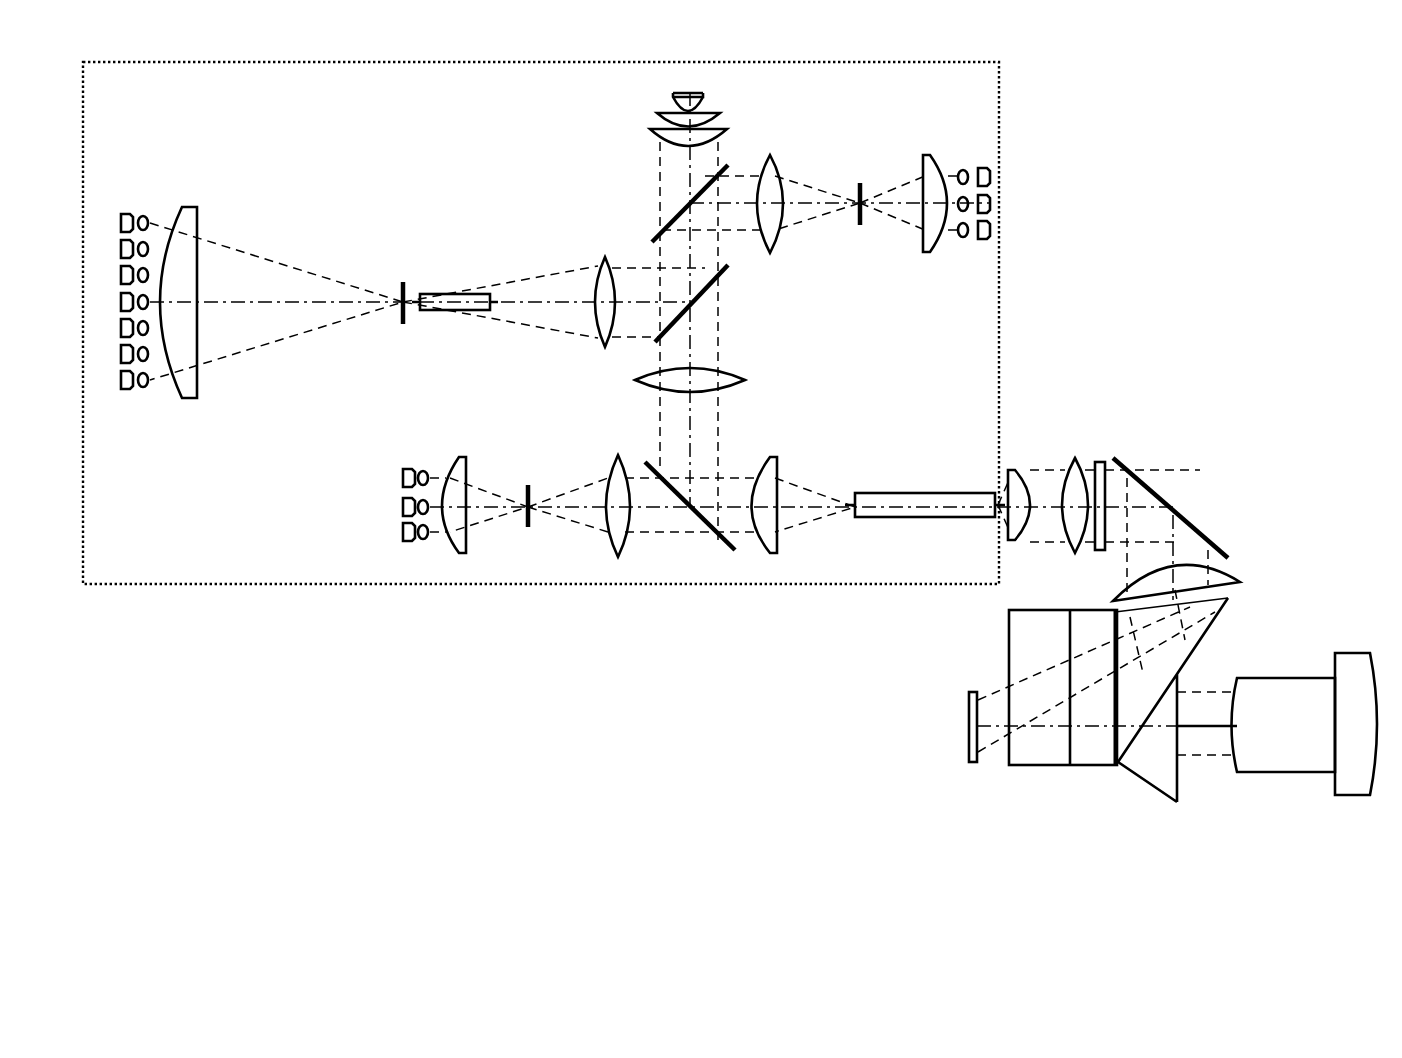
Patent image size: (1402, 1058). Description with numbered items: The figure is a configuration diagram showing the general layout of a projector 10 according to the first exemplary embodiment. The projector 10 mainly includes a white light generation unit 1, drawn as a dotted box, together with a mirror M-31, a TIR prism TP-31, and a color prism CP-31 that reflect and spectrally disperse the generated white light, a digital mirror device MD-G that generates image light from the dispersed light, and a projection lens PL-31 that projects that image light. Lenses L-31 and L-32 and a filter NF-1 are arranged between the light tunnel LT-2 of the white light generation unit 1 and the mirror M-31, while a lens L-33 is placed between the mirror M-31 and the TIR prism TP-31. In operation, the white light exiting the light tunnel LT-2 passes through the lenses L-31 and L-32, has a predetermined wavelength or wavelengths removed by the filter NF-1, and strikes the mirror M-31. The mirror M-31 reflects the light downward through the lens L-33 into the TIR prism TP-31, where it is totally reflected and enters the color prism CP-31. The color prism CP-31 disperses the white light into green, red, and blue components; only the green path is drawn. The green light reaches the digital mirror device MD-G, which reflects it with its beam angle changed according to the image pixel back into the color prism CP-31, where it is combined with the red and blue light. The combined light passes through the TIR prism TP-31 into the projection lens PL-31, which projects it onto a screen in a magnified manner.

The projector 10 is at (1310, 155).
The white light generation unit 1 is at (999, 130).
The light tunnel LT-2 is at (917, 492).
The lens L-31 is at (1010, 468).
The lens L-32 is at (1073, 455).
The filter NF-1 is at (1100, 460).
The mirror M-31 is at (1165, 493).
The lens L-33 is at (1240, 580).
The color prism CP-31 is at (1053, 757).
The TIR prism TP-31 is at (1165, 785).
The digital mirror device MD-G is at (968, 730).
The projection lens PL-31 is at (1332, 658).